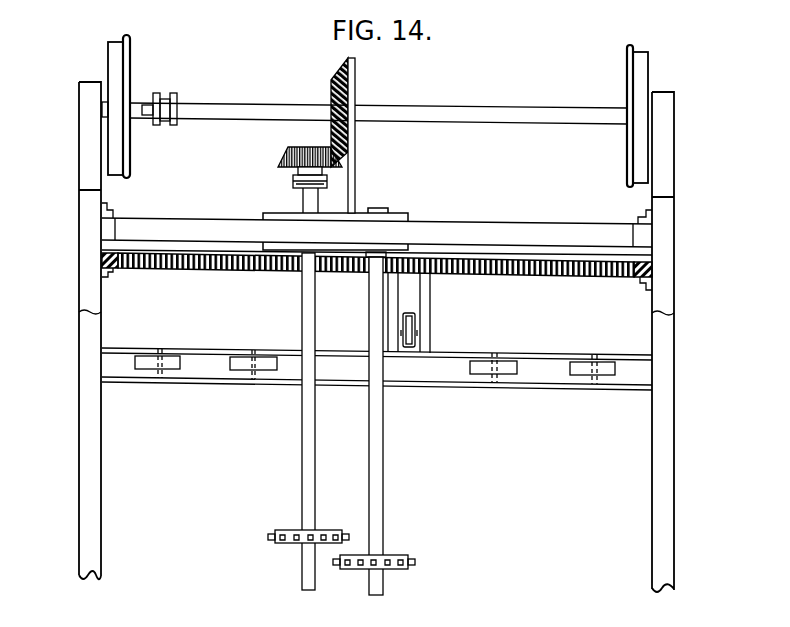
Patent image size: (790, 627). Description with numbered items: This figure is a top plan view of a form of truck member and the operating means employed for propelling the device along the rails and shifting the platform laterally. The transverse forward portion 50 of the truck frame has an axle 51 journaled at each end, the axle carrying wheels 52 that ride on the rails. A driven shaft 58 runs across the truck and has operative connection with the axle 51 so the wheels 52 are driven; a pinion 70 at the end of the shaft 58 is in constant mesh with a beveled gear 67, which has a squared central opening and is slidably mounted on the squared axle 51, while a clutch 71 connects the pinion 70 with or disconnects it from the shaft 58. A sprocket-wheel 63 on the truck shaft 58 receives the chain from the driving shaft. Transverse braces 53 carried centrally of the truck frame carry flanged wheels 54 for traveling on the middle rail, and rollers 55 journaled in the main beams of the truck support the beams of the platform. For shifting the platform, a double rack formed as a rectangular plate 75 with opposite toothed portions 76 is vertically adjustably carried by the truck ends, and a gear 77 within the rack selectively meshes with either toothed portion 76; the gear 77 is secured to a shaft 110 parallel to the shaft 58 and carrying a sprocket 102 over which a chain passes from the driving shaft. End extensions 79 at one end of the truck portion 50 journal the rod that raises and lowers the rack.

The transverse forward portion 50 is at (73, 330).
The end extensions 79 is at (85, 133).
The axle 51 is at (230, 110).
The wheels 52 is at (637, 80).
The beveled gear 67 is at (332, 75).
The pinion 70 is at (291, 151).
The clutch 71 is at (293, 181).
The rectangular plate 75 is at (637, 273).
The toothed portions 76 is at (555, 273).
The gear 77 is at (363, 273).
The transverse braces 53 is at (424, 316).
The flanged wheels 54 is at (408, 347).
The rollers 55 is at (162, 366).
The driven shaft 58 is at (303, 463).
The gear shaft 110 is at (386, 472).
The sprocket-wheel 63 is at (268, 535).
The sprocket 102 is at (414, 558).